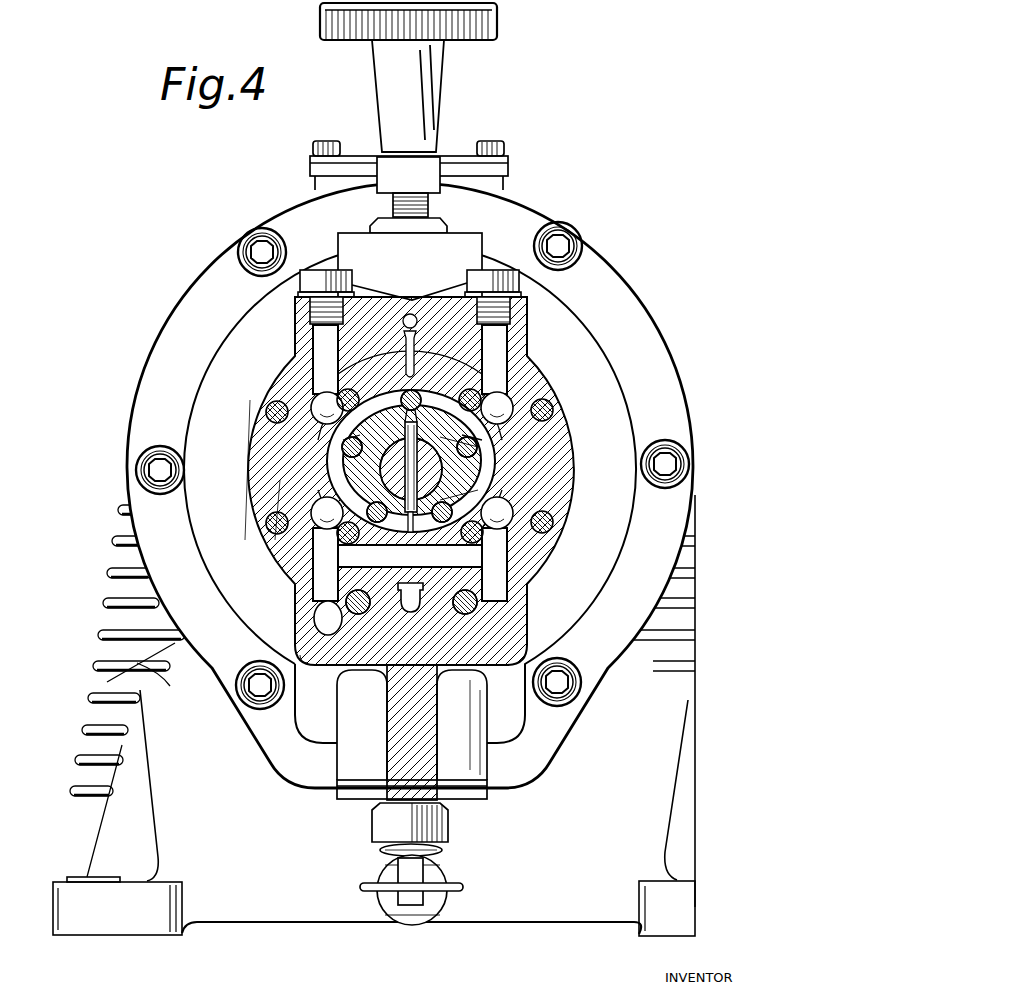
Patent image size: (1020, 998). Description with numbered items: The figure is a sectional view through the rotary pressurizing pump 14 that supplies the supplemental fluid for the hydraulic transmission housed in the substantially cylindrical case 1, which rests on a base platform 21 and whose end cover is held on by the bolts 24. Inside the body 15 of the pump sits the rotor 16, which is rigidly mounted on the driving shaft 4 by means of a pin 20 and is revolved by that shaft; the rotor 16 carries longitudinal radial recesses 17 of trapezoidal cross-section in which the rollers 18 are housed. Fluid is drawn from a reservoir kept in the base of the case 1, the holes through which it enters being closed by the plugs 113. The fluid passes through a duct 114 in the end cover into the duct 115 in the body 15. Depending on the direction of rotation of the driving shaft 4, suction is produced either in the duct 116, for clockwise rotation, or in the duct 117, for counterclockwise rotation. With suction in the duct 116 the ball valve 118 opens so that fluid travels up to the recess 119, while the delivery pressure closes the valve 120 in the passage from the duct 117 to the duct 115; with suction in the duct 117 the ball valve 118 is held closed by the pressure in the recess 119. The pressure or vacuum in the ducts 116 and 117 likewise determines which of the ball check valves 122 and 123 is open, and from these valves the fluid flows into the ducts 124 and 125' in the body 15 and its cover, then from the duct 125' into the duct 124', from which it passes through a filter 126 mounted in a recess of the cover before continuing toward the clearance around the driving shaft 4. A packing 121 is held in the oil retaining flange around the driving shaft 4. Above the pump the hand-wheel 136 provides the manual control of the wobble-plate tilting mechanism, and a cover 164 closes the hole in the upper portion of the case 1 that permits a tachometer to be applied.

The case 1 is at (641, 299).
The driving shaft 4 is at (350, 492).
The rotary pressurizing pump 14 is at (302, 545).
The body of the pressurizing pump 15 is at (300, 527).
The rotor 16 is at (393, 397).
The longitudinal radial recesses 17 is at (352, 434).
The rollers 18 is at (513, 347).
The pin 20 is at (445, 466).
The base platform 21 is at (108, 920).
The bolts 24 is at (256, 240).
The plugs 113 is at (97, 613).
The duct 114 is at (322, 617).
The duct 115 is at (452, 552).
The duct 116 is at (395, 470).
The duct 117 is at (490, 488).
The ball valve 118 is at (318, 510).
The recess 119 is at (338, 458).
The valve 120 is at (505, 508).
The packing 121 is at (478, 450).
The ball check valve 122 is at (322, 408).
The ball check valve 123 is at (538, 403).
The duct 124 is at (417, 359).
The duct 124' is at (384, 655).
The duct 125' is at (321, 677).
The filter 126 is at (437, 828).
The hand-wheel 136 is at (497, 18).
The cover 164 is at (508, 163).